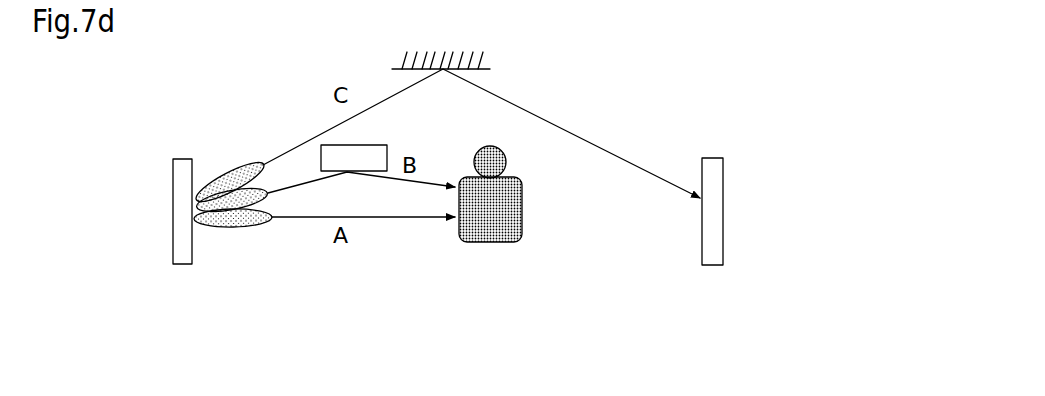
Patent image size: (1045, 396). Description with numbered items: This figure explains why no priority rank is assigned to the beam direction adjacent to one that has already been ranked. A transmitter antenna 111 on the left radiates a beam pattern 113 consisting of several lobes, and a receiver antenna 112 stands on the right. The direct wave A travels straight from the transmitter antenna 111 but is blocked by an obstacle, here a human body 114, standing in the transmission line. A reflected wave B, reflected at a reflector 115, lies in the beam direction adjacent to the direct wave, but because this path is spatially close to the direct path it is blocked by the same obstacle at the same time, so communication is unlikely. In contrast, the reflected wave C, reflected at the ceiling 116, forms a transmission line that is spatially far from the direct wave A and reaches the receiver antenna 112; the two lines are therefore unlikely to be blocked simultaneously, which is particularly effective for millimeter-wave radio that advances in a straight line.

The transmitter antenna 111 is at (173, 175).
The receiver antenna 112 is at (723, 195).
The beam pattern 113 is at (242, 163).
The person / body 114 is at (522, 215).
The reflector 115 is at (387, 145).
The ceiling 116 is at (492, 70).